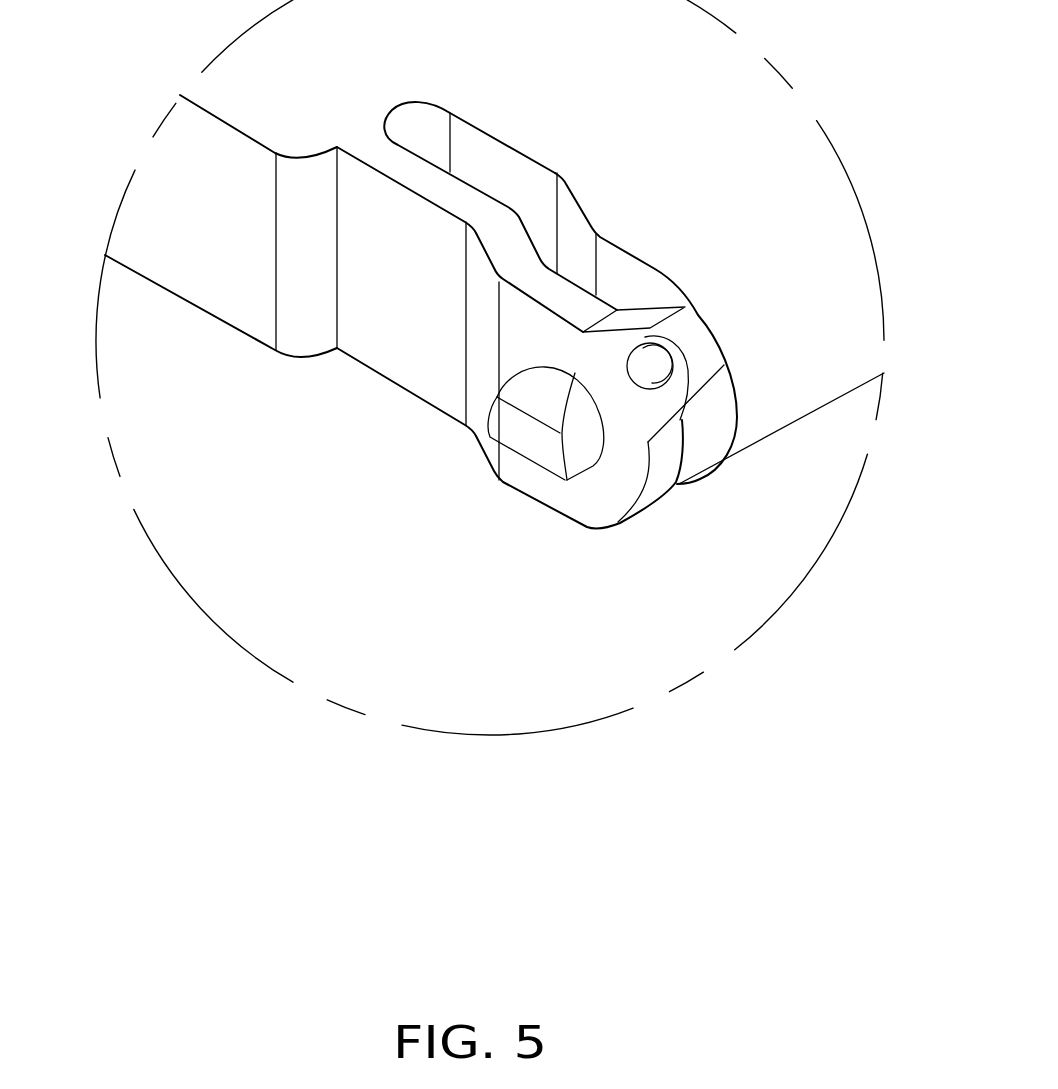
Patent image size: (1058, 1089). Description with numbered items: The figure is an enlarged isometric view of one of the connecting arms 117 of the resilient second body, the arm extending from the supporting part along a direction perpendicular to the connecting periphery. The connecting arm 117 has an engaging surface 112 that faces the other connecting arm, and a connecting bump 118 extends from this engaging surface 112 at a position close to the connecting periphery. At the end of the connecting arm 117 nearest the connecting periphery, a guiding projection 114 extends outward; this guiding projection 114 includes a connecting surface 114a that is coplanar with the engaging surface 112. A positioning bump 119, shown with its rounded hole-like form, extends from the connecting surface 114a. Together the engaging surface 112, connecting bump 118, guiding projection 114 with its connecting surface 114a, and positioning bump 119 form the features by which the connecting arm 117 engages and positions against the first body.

The engaging surface 112 is at (430, 292).
The guiding projection 114 is at (688, 400).
The connecting surface 114a is at (652, 407).
The connecting arm 117 is at (265, 398).
The connecting bump 118 is at (536, 443).
The positioning bump 119 is at (652, 368).